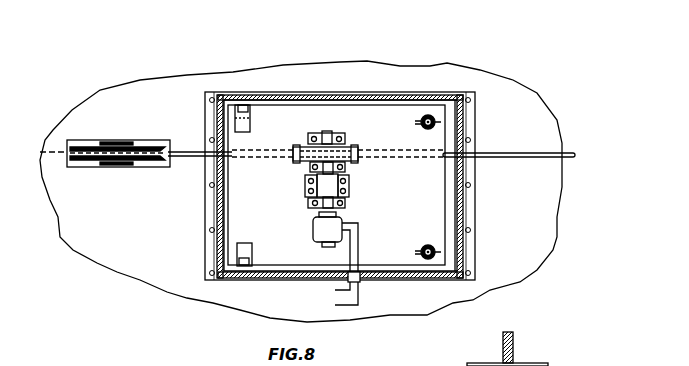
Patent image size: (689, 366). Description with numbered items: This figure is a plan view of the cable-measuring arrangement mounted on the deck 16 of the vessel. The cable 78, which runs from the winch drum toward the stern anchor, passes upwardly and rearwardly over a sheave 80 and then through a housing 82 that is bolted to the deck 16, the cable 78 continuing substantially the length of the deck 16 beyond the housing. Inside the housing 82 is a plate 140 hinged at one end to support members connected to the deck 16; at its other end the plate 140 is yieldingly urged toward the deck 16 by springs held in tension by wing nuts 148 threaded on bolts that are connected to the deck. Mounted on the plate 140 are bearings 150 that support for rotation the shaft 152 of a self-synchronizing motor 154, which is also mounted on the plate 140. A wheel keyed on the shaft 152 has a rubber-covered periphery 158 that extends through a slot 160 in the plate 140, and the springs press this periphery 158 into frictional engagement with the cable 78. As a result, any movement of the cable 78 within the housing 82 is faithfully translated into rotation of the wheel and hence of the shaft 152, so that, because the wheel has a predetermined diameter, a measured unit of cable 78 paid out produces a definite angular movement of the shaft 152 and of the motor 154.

The deck 16 is at (518, 101).
The cable 78 is at (570, 153).
The sheave 80 is at (157, 146).
The housing 82 is at (358, 95).
The plate 140 is at (450, 224).
The wing nuts 148 is at (432, 119).
The bearings 150 is at (333, 134).
The shaft 152 is at (327, 133).
The self-synchronizing motor 154 is at (313, 228).
The rubber-covered periphery 158 is at (303, 160).
The slot 160 is at (358, 151).